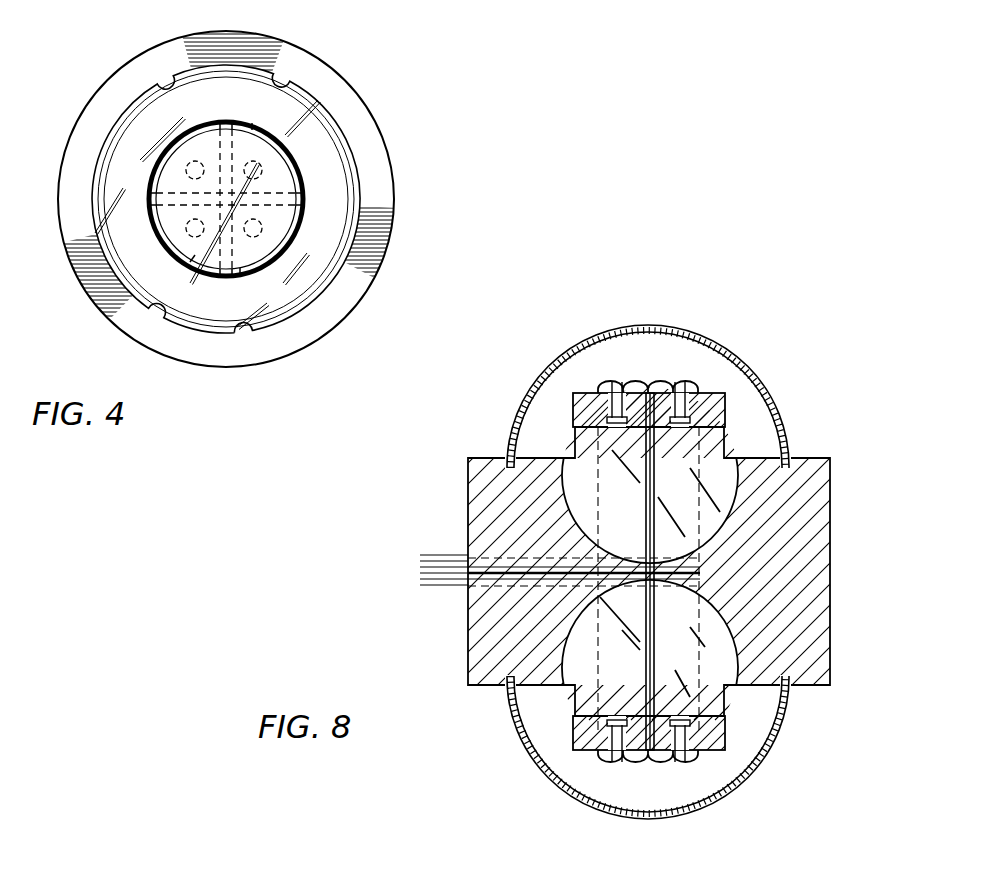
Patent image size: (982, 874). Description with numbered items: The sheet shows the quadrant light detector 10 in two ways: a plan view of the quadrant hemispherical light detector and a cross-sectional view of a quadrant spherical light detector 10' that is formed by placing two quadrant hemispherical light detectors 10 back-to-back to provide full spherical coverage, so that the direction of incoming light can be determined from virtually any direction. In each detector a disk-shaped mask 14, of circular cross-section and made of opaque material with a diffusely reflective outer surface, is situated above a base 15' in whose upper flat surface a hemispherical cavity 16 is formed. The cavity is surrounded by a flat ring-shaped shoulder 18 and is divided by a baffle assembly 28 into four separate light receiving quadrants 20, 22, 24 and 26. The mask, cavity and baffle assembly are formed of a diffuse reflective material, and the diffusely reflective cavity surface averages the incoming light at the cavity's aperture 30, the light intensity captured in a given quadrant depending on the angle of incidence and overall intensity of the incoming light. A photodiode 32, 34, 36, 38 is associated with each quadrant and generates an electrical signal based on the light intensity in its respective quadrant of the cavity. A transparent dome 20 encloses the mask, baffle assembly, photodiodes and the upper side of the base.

In FIG. 4, the quadrant light detector 10 is at (230, 199).
In FIG. 8, the quadrant light detector 10 is at (596, 550).
In FIG. 8, the transducer assembly 10' is at (727, 506).
In FIG. 4, the mask 14 is at (283, 220).
In FIG. 8, the mask 14 is at (588, 395).
In FIG. 8, the lead wires 15' is at (536, 546).
In FIG. 4, the hemispherical cavity 16 is at (300, 173).
In FIG. 4, the ring-shaped shoulder 18 is at (325, 142).
In FIG. 4, the quadrant 20 is at (198, 142).
In FIG. 8, the quadrant 20 is at (642, 325).
In FIG. 4, the quadrant 22 is at (252, 143).
In FIG. 4, the quadrant 24 is at (241, 270).
In FIG. 4, the quadrant 26 is at (189, 264).
In FIG. 4, the baffle assembly 28 is at (226, 140).
In FIG. 8, the baffle assembly 28 is at (705, 445).
In FIG. 4, the aperture 30 is at (253, 280).
In FIG. 8, the aperture 30 is at (725, 452).
In FIG. 4, the photodiode 32 is at (187, 172).
In FIG. 4, the photodiode 34 is at (263, 163).
In FIG. 4, the photodiode 36 is at (258, 233).
In FIG. 4, the photodiode 38 is at (187, 232).